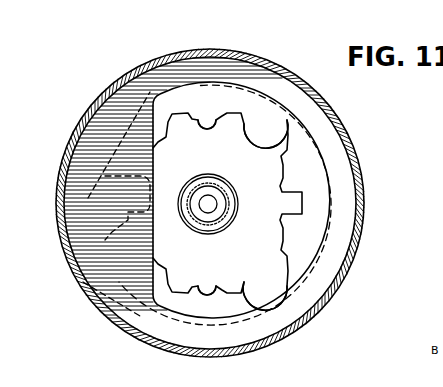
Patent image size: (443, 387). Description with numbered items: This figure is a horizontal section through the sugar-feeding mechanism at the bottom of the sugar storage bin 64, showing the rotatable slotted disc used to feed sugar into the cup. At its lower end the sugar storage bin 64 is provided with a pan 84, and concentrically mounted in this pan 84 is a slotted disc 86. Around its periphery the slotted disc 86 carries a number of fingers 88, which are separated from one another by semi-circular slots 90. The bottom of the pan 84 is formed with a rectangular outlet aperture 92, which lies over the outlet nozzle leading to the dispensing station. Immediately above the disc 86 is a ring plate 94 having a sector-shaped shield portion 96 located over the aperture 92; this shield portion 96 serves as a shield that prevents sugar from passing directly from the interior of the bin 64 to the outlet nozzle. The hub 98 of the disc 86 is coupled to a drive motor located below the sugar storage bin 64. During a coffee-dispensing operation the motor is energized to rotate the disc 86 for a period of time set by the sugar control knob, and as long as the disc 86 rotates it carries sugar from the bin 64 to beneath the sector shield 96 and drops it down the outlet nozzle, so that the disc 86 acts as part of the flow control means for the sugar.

The sugar storage bin 64 is at (327, 298).
The pan 84 is at (330, 223).
The slotted disc 86 is at (255, 183).
The fingers 88 is at (238, 282).
The semi-circular slots 90 is at (203, 279).
The rectangular outlet aperture 92 is at (84, 284).
The ring plate 94 is at (213, 72).
The sector-shaped shield portion 96 is at (110, 163).
The hub 98 is at (209, 205).